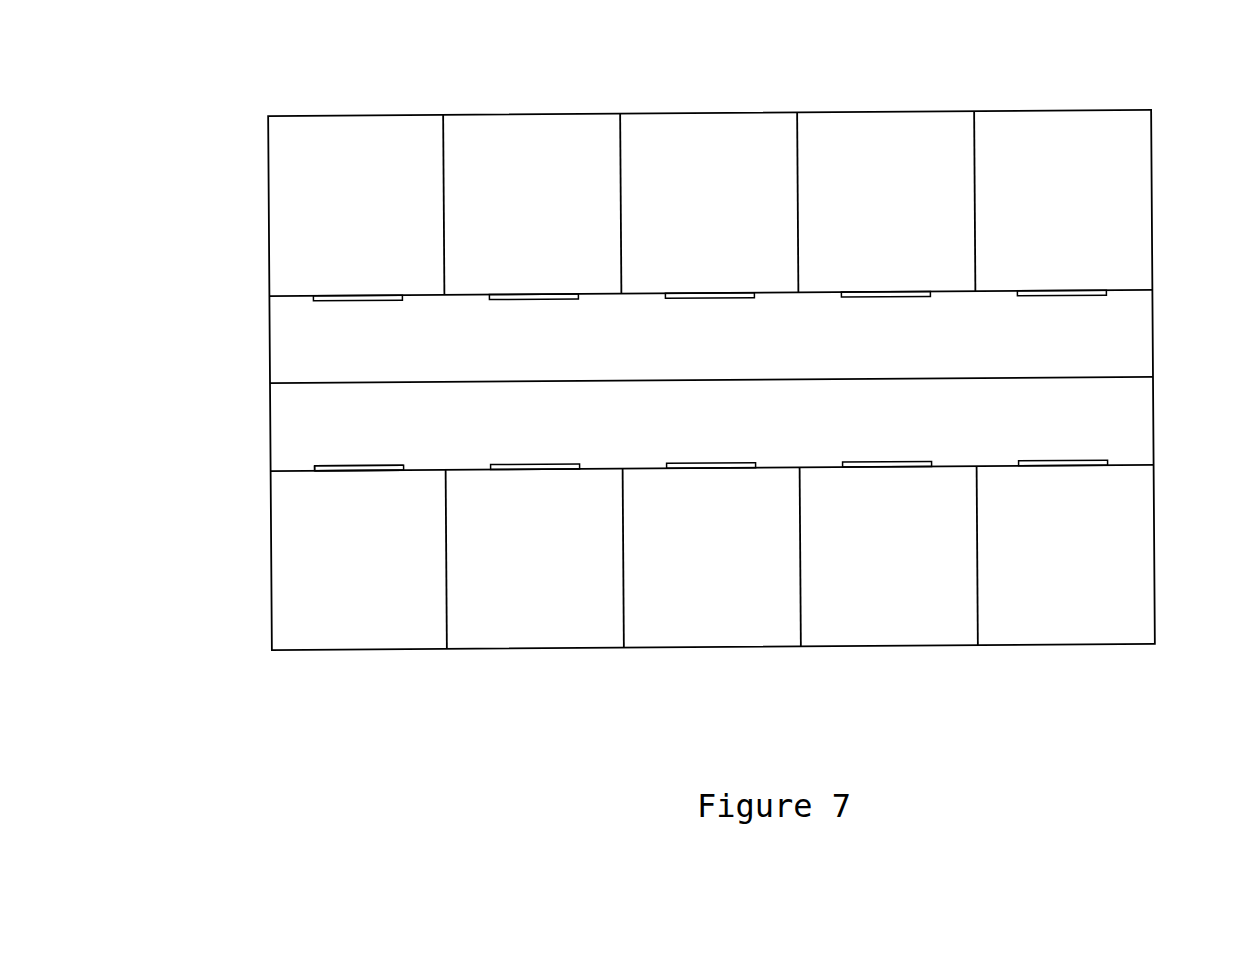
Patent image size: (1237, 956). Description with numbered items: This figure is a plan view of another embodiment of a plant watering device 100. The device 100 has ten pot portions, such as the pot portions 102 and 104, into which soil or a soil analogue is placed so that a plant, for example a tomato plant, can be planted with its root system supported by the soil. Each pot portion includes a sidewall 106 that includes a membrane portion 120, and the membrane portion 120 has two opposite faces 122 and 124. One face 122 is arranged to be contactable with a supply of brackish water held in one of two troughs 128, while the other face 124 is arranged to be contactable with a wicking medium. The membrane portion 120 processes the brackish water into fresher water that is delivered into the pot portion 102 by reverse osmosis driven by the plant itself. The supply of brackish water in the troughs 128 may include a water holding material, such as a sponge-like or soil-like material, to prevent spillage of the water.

The plant watering device 100 is at (199, 98).
The pot portion 102 is at (311, 624).
The pot portion 104 is at (909, 146).
The sidewall 106 is at (827, 291).
The membrane portion 120 is at (314, 465).
The face 122 is at (371, 463).
The face 124 is at (361, 471).
The trough 128 is at (1113, 326).